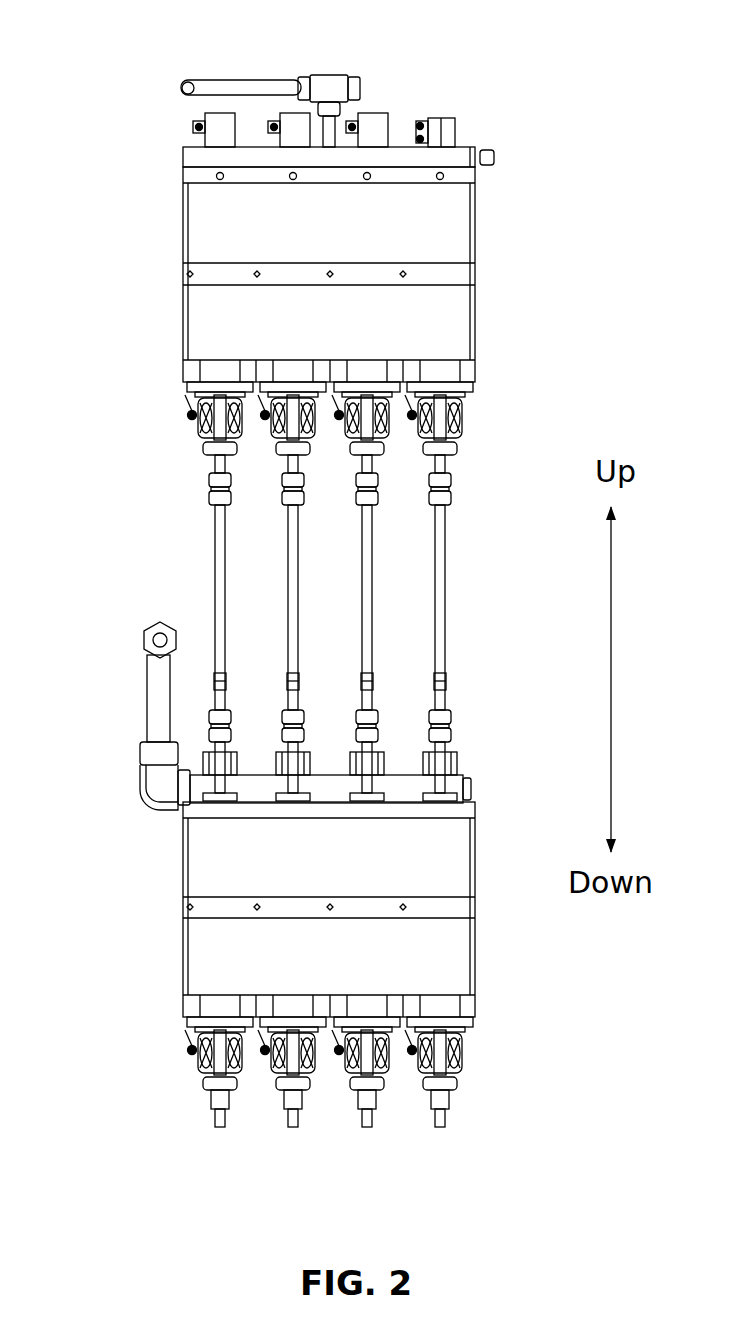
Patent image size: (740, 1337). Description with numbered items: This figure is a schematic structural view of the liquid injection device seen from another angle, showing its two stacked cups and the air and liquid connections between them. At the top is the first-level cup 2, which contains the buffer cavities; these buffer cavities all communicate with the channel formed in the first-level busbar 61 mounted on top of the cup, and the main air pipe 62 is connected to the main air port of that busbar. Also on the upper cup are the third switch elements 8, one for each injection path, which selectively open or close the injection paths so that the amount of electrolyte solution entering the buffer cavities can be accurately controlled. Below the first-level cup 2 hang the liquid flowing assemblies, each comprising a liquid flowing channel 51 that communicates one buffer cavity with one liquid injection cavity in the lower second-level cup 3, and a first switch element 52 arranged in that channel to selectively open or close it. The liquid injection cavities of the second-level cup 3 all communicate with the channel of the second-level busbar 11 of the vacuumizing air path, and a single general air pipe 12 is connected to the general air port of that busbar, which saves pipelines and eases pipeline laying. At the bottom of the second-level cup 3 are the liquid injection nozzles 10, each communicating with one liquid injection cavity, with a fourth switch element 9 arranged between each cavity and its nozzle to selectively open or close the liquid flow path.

The first-level cup 2 is at (213, 248).
The second-level cup 3 is at (204, 949).
The third switch element 8 is at (372, 128).
The fourth switch element 9 is at (200, 1050).
The liquid injection nozzle 10 is at (436, 1122).
The second-level busbar 11 is at (470, 786).
The general air pipe 12 is at (155, 716).
The liquid flowing channel 51 is at (238, 612).
The first switch element 52 is at (455, 428).
The first-level busbar 61 is at (197, 158).
The main air pipe 62 is at (191, 80).